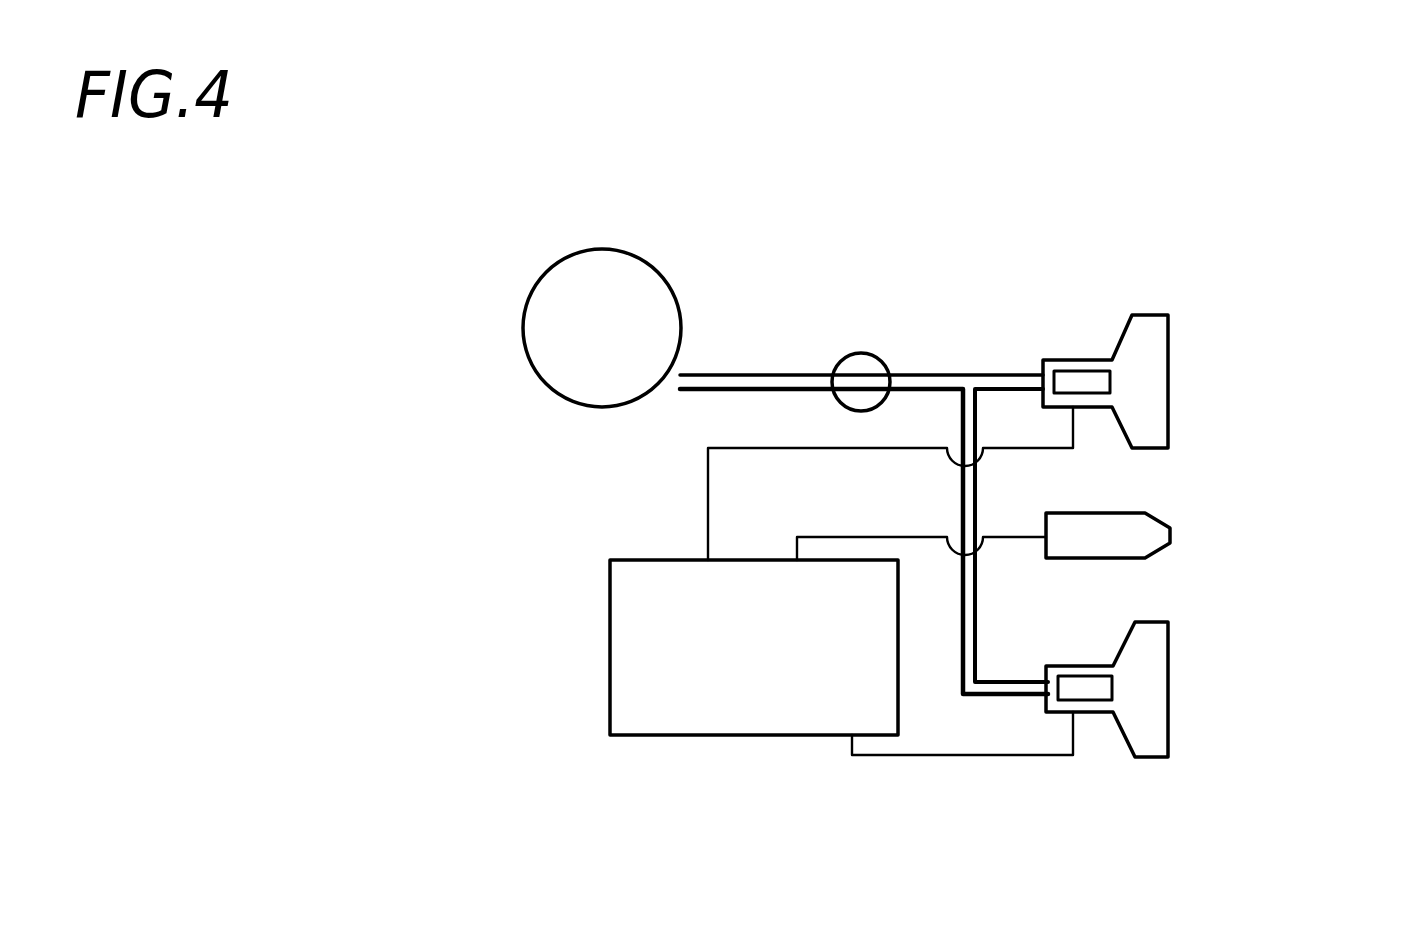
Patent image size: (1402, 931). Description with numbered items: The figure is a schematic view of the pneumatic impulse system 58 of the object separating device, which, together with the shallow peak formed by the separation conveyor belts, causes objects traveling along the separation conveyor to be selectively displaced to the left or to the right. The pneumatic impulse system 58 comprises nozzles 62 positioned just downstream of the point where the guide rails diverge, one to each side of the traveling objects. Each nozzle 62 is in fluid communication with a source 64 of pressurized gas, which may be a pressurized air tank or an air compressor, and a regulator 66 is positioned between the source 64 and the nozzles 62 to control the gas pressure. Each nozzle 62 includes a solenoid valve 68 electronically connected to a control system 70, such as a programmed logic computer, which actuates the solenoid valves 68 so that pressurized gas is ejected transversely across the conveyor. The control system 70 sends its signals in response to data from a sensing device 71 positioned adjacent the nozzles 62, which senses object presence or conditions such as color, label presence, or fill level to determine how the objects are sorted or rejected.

The pneumatic impulse system 58 is at (1260, 460).
The nozzle 62 is at (1157, 365).
The source of pressurized gas 64 is at (657, 268).
The regulator 66 is at (877, 355).
The solenoid valve 68 is at (1093, 377).
The control system 70 is at (667, 723).
The sensing device 71 is at (1157, 535).